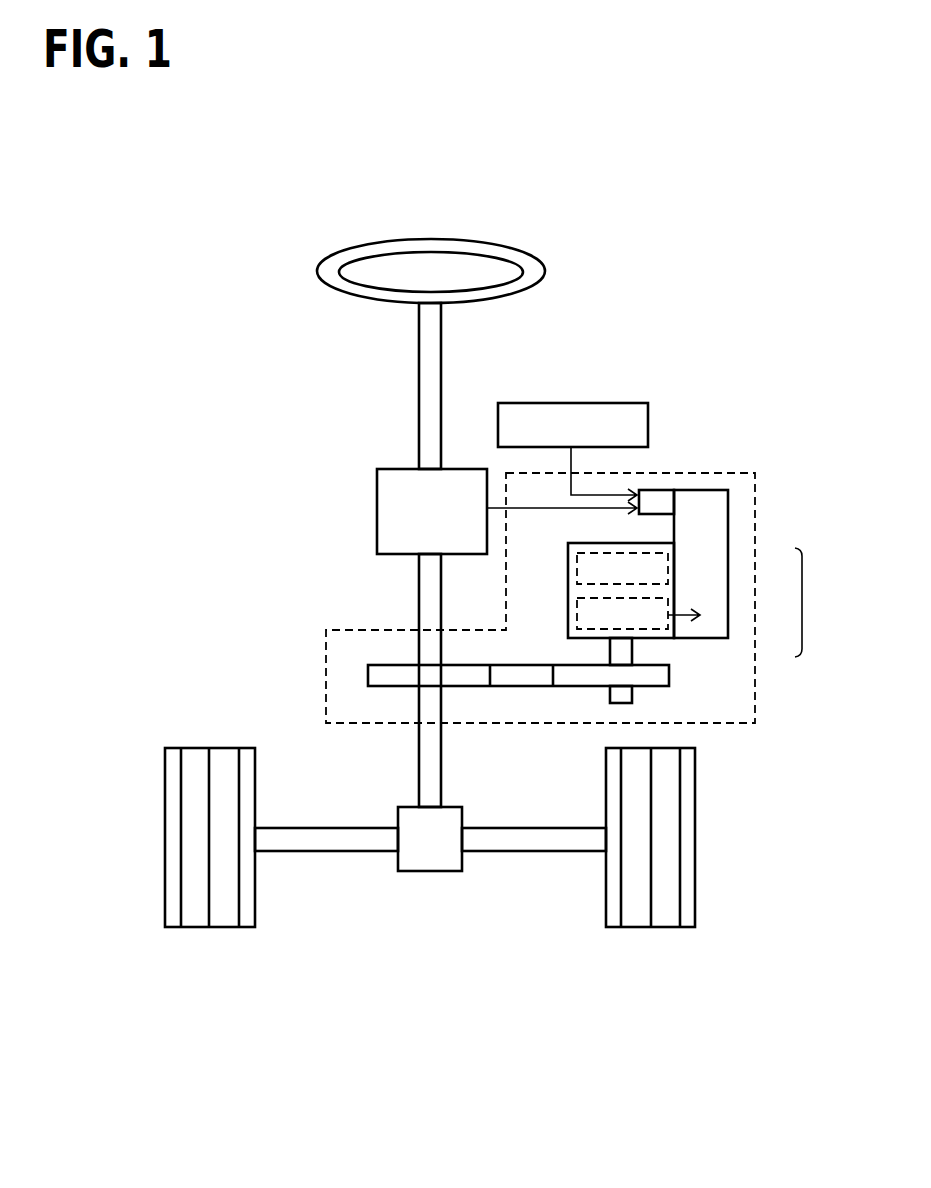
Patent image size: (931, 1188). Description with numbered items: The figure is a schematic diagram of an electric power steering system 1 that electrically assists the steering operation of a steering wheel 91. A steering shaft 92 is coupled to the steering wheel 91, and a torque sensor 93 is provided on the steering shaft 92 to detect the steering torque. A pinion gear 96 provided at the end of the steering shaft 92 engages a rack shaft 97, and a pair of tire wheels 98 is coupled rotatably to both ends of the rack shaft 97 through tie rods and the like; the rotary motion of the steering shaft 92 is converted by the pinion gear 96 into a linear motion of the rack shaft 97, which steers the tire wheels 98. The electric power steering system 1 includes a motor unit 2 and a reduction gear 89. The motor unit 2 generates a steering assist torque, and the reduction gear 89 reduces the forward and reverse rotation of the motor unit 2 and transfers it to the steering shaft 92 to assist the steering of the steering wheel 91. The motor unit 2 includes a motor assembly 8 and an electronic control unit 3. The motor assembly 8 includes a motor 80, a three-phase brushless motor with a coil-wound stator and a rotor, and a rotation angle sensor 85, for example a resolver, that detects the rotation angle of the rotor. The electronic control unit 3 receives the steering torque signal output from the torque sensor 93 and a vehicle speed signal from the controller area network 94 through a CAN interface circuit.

The electric power steering system 1 is at (755, 497).
The motor unit 2 is at (808, 602).
The electronic control unit (ECU) 3 is at (728, 561).
The motor assembly 8 is at (659, 638).
The motor 80 is at (568, 567).
The rotation angle sensor 85 is at (568, 613).
The reduction gear 89 is at (669, 675).
The steering wheel 91 is at (317, 271).
The steering shaft 92 is at (419, 365).
The torque sensor 93 is at (377, 518).
The controller area network (CAN) 94 is at (568, 403).
The pinion gear 96 is at (421, 871).
The rack shaft 97 is at (320, 851).
The tire wheels 98 is at (228, 927).